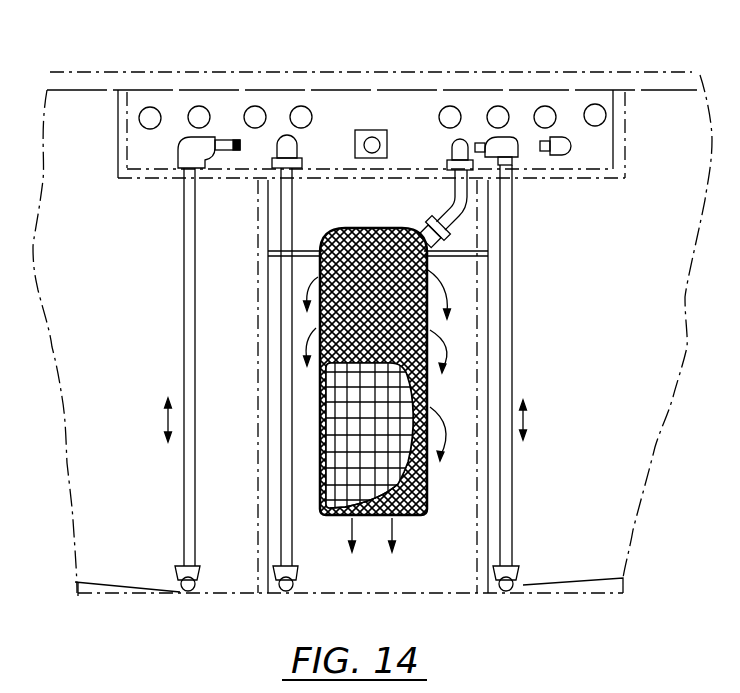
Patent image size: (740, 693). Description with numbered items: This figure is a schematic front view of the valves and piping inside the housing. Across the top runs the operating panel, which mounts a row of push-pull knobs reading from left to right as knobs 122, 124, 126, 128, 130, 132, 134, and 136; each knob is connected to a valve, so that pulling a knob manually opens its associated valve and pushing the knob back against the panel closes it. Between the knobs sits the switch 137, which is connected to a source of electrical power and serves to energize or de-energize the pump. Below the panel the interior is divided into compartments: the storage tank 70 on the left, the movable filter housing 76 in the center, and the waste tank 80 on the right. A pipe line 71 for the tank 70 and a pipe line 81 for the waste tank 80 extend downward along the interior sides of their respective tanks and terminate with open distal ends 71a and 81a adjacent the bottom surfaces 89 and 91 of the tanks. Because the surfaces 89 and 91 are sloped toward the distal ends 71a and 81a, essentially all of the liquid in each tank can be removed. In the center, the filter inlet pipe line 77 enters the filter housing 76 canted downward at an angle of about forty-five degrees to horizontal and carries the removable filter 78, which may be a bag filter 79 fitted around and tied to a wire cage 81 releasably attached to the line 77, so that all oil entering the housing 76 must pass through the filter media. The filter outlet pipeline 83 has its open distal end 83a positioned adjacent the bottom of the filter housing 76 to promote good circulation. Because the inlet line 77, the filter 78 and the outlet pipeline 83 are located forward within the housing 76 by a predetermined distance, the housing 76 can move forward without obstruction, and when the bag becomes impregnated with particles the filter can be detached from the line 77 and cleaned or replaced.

The tank 70 is at (85, 409).
The waste tank 80 is at (592, 397).
The bottom surface 89 is at (108, 585).
The bottom surface 91 is at (592, 593).
The filter housing 76 is at (447, 593).
The pipe line 71 is at (183, 312).
The open distal end 71a is at (177, 582).
The filter outlet pipeline 83 is at (292, 558).
The open distal end 83a is at (282, 592).
The filter inlet pipe line 77 is at (465, 227).
The filter 78 is at (430, 495).
The bag filter 79 is at (430, 387).
The pipe line 81 is at (513, 248).
The open distal end 81a is at (517, 582).
The push-pull knob 122 is at (148, 107).
The push-pull knob 124 is at (199, 106).
The push-pull knob 126 is at (253, 106).
The push-pull knob 128 is at (303, 106).
The push-pull knob 130 is at (451, 106).
The push-pull knob 132 is at (500, 106).
The push-pull knob 134 is at (547, 106).
The push-pull knob 136 is at (597, 104).
The switch 137 is at (370, 130).